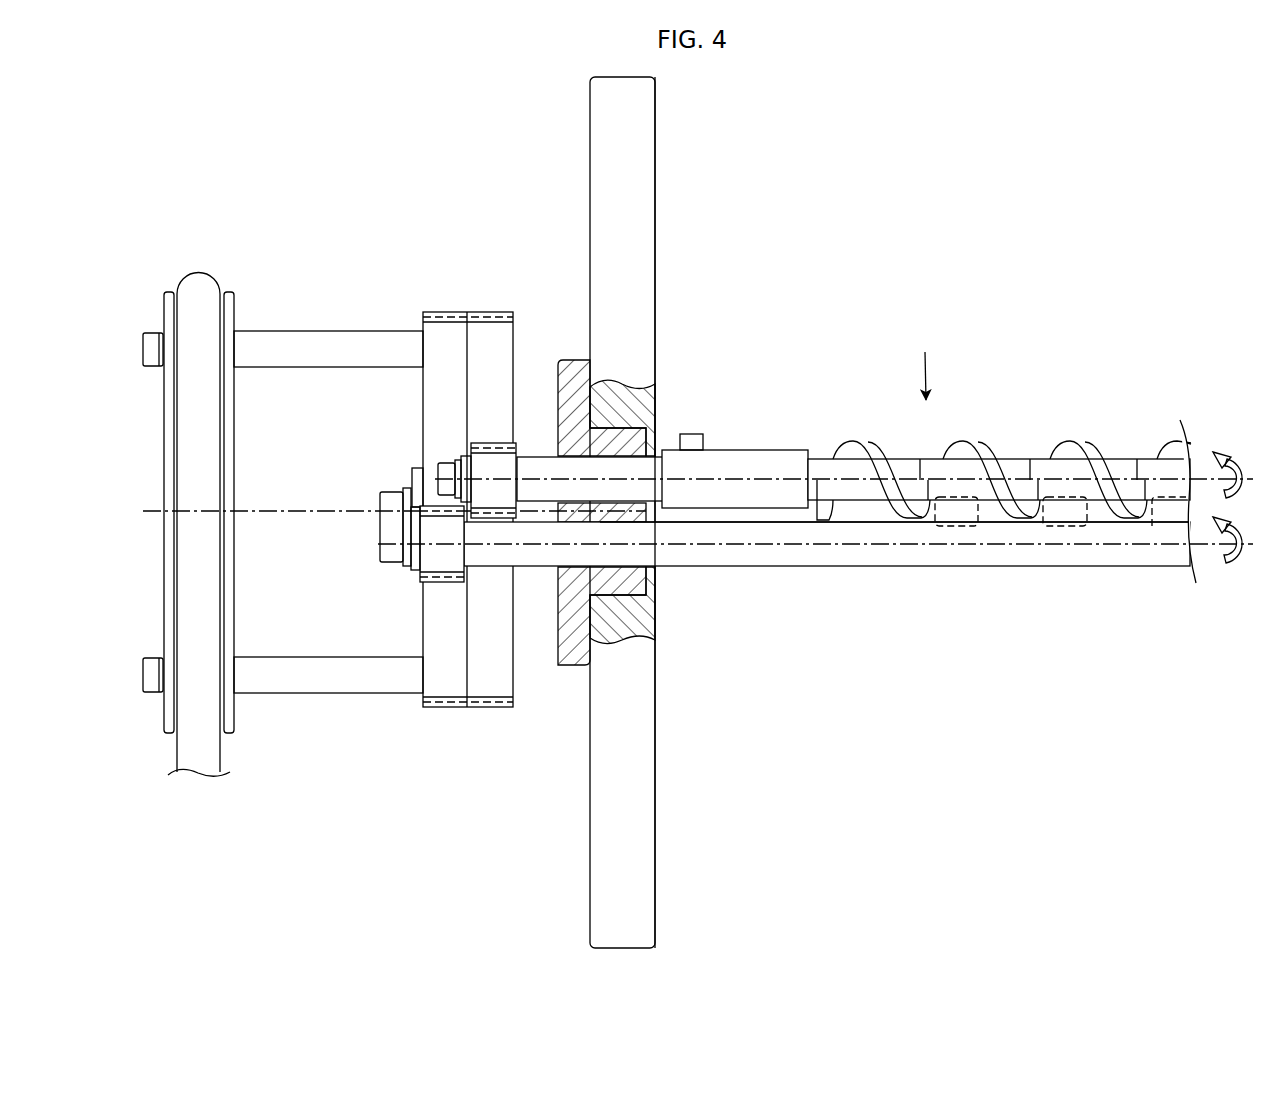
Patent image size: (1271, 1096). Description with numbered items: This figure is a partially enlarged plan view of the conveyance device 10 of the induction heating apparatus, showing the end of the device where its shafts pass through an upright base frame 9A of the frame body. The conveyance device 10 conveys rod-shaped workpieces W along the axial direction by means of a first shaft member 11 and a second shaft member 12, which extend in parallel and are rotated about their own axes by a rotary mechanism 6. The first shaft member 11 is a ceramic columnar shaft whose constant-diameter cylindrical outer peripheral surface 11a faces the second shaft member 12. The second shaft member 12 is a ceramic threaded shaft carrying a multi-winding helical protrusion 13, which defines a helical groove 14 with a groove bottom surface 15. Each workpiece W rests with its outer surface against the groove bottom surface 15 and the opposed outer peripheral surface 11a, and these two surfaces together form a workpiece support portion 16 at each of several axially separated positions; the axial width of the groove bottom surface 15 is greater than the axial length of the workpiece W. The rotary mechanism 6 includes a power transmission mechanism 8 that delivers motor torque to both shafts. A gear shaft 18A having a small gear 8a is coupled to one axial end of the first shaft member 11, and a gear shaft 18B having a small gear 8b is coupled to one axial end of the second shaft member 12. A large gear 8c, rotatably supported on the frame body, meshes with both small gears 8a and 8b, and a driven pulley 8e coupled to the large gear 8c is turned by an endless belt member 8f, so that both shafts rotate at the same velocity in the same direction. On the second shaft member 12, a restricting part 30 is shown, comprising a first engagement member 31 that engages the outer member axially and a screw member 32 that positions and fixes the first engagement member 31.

The base frame 9A is at (659, 134).
The rotary mechanism 6 is at (426, 231).
The power transmission mechanism 8 is at (202, 501).
The endless belt member 8f is at (203, 284).
The driven pulley 8e is at (166, 448).
The large gear 8c is at (452, 309).
The small gear 8b is at (485, 443).
The small gear 8a is at (438, 582).
The gear shaft 18B is at (538, 467).
The gear shaft 18A is at (538, 566).
The restricting part 30 is at (737, 438).
The first engagement member 31 is at (738, 460).
The screw member 32 is at (691, 434).
The conveyance device 10 is at (990, 451).
The second shaft member 12 is at (1031, 432).
The helical protrusion 13 is at (979, 439).
The helical groove 14 is at (1012, 439).
The groove bottom surface 15 is at (938, 470).
The workpiece support portion 16 is at (985, 519).
The rod-shaped workpiece W is at (958, 528).
The first shaft member 11 is at (1150, 560).
The outer peripheral surface 11a is at (839, 555).